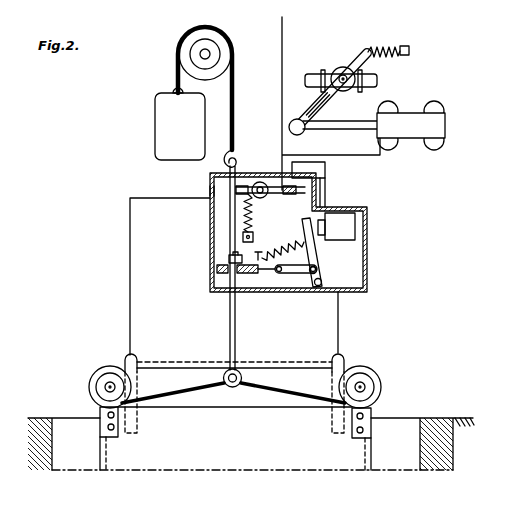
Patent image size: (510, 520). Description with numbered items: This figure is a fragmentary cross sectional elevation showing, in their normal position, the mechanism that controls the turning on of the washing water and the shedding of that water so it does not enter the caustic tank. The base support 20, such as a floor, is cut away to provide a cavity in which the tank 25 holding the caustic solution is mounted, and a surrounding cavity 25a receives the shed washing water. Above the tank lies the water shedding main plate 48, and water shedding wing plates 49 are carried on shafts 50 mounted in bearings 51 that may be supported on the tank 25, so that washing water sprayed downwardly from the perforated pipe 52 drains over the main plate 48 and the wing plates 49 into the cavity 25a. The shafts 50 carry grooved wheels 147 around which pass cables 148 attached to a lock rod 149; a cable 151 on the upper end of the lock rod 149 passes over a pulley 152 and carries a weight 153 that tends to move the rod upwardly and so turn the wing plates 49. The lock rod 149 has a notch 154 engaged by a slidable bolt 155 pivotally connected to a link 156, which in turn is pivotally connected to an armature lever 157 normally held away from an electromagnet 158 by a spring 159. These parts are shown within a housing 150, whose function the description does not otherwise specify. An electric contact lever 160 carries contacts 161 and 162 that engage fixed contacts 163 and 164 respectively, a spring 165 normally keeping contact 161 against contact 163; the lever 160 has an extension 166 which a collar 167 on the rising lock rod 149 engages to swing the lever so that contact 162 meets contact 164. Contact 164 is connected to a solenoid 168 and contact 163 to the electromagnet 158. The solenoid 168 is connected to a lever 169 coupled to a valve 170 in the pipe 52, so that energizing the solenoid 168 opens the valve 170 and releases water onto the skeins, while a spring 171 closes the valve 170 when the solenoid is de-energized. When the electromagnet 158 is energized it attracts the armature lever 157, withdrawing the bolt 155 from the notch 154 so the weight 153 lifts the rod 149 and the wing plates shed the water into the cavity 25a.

The base support 20 is at (446, 418).
The tank 25 is at (337, 466).
The cavity 25a is at (263, 450).
The water shedding main plate 48 is at (193, 362).
The water shedding wing plates 49 is at (126, 360).
The shafts 50 is at (108, 387).
The bearings 51 is at (104, 422).
The pipe 52 is at (372, 82).
The grooved wheels 147 is at (90, 383).
The cables 148 is at (200, 390).
The lock rod 149 is at (237, 322).
The housing 150 is at (367, 255).
The cable 151 is at (237, 96).
The pulley 152 is at (210, 38).
The weight 153 is at (166, 117).
The notch 154 is at (217, 273).
The slidable bolt 155 is at (270, 274).
The link 156 is at (310, 287).
The armature lever 157 is at (313, 254).
The electromagnet 158 is at (350, 230).
The spring 159 is at (290, 251).
The electric contact lever 160 is at (258, 182).
The contact 161 is at (312, 185).
The contact 162 is at (300, 197).
The electric contact 163 is at (312, 168).
The electric contact 164 is at (252, 209).
The spring 165 is at (254, 236).
The extension 166 is at (213, 192).
The collar 167 is at (229, 259).
The solenoid 168 is at (410, 135).
The lever 169 is at (333, 92).
The valve 170 is at (343, 74).
The spring 171 is at (385, 49).